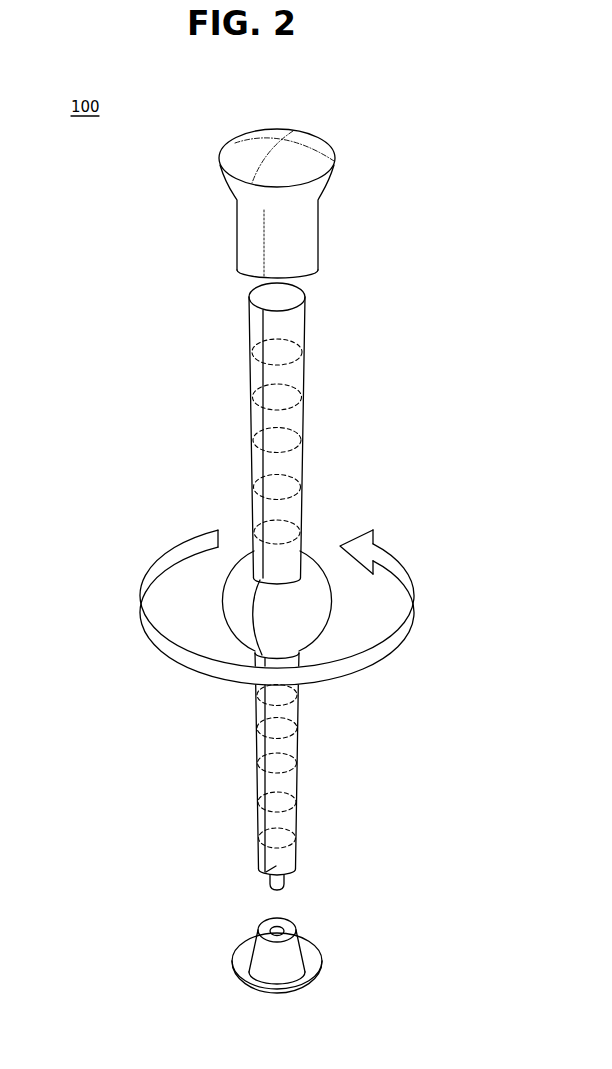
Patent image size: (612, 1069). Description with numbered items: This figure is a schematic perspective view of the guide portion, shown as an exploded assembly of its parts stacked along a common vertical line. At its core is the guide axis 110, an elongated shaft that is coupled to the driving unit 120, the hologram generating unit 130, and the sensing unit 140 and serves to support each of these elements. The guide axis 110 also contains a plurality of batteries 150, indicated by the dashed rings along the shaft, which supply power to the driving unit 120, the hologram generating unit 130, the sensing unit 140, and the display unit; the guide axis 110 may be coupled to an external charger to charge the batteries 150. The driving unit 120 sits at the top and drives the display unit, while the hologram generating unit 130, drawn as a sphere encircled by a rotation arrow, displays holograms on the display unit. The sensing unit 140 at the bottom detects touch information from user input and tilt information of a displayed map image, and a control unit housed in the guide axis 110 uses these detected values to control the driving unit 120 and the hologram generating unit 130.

The guide axis 110 is at (263, 327).
The driving unit 120 is at (253, 225).
The hologram generating unit 130 is at (250, 598).
The sensing unit 140 is at (267, 955).
The battery 150 is at (292, 372).